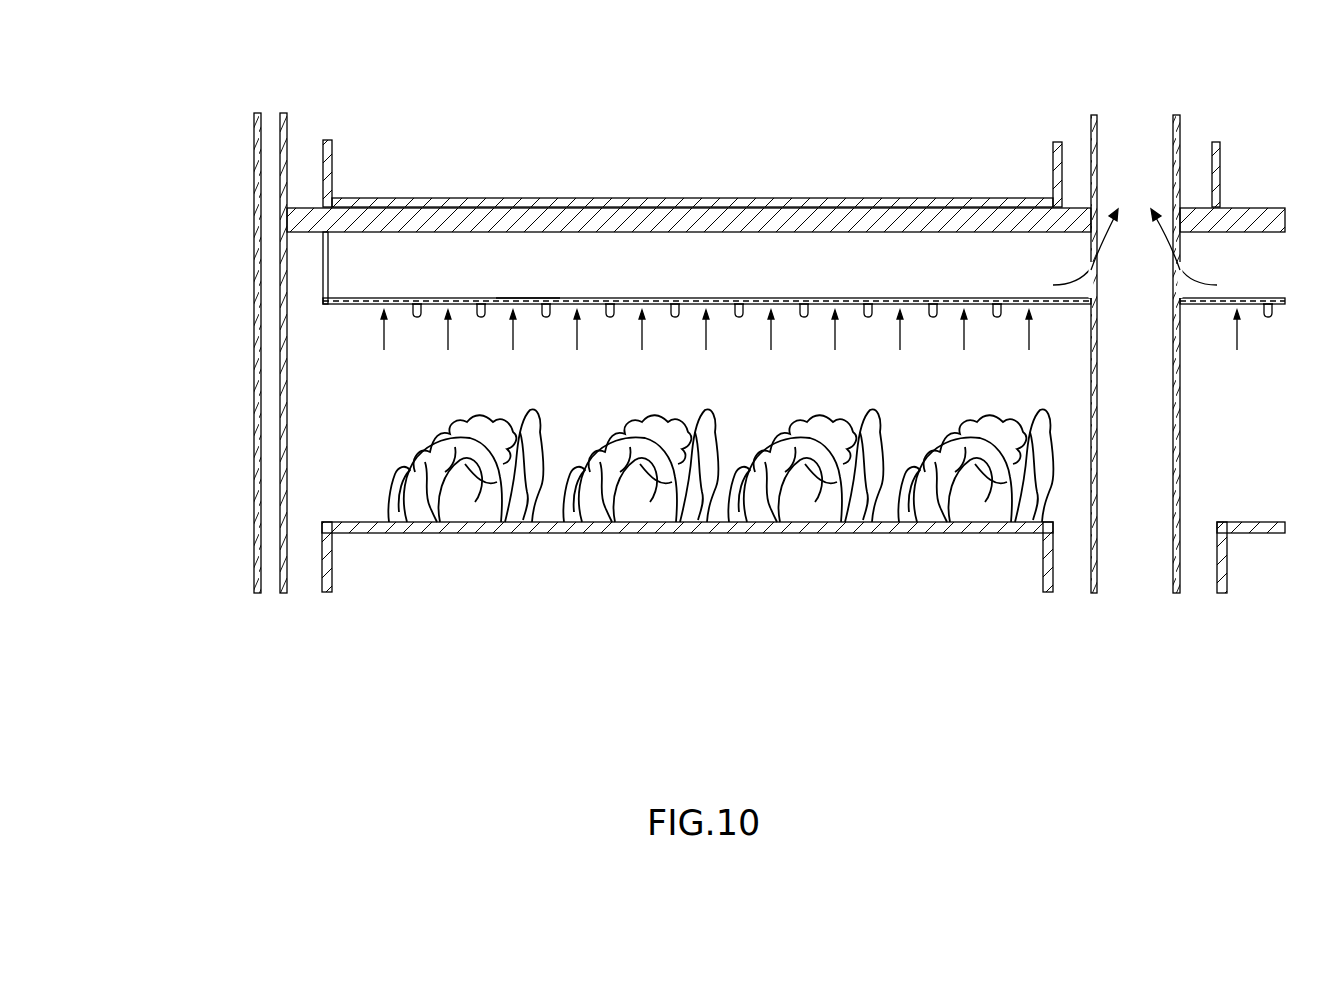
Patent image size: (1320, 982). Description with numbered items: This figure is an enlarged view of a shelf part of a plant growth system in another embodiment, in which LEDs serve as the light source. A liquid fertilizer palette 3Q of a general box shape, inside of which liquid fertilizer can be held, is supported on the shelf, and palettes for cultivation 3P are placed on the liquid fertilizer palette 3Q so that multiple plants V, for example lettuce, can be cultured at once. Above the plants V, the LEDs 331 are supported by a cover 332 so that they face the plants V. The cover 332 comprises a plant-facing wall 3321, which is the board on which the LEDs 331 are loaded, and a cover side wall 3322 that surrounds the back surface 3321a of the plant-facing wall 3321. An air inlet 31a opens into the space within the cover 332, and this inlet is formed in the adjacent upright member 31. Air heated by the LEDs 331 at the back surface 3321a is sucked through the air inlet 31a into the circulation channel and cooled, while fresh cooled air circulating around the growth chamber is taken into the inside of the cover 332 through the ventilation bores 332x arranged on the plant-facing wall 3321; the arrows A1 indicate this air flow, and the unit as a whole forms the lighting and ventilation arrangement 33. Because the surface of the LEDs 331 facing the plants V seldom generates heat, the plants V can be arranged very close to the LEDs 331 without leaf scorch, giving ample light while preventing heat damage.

The support post 31 is at (255, 133).
The air inlet 31a is at (1090, 292).
The liquid fertilizer palette 3Q is at (323, 150).
The palette for cultivation 3P is at (322, 523).
The air supply unit 33 is at (681, 293).
The cover 332 is at (681, 291).
The plant-facing wall 3321 is at (349, 302).
The back surface 3321a is at (528, 298).
The cover side wall 3322 is at (323, 287).
The ventilation bores 332x is at (383, 298).
The LED 331 is at (417, 318).
The plant V is at (455, 410).
The air flow A1 is at (1135, 230).